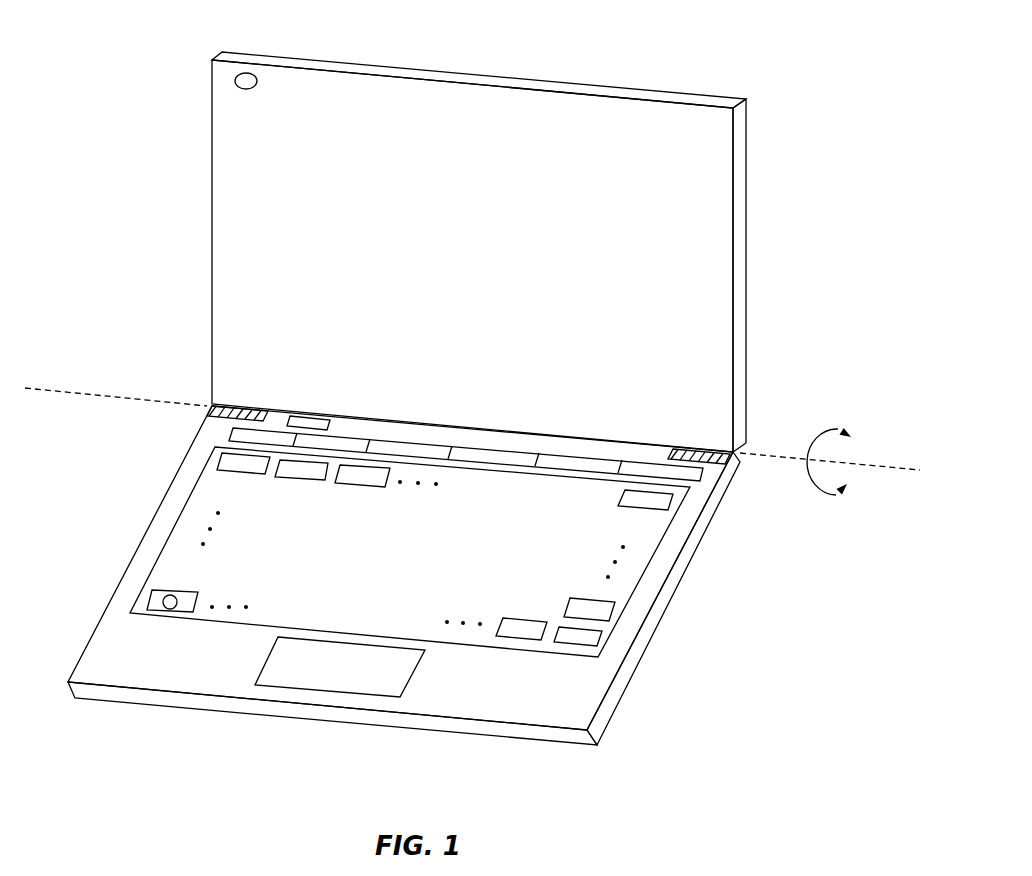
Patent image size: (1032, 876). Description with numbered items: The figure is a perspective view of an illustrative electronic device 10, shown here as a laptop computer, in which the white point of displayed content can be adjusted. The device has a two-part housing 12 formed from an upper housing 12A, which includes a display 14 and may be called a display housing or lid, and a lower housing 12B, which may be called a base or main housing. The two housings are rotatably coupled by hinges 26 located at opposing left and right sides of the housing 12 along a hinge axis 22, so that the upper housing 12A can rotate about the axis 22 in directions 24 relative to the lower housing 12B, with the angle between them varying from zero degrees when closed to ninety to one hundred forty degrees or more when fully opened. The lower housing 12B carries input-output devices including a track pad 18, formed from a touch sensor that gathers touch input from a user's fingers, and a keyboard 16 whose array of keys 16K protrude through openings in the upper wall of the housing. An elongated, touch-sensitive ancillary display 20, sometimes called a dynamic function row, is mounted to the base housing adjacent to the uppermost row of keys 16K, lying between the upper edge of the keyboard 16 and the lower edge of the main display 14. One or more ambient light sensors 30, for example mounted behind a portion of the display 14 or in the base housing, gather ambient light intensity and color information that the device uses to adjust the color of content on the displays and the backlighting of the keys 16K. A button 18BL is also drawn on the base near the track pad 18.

The electronic device 10 is at (804, 64).
The housing 12 is at (747, 382).
The upper housing 12A is at (198, 62).
The lower housing 12B is at (192, 412).
The display 14 is at (666, 273).
The keyboard 16 is at (578, 658).
The keys 16K is at (613, 612).
The track pad 18 is at (328, 694).
The button 18BL is at (168, 611).
The ancillary display 20 is at (695, 474).
The hinge axis 22 is at (52, 388).
The directions 24 is at (830, 498).
The hinges 26 is at (242, 408).
The ambient light sensors 30 is at (252, 74).